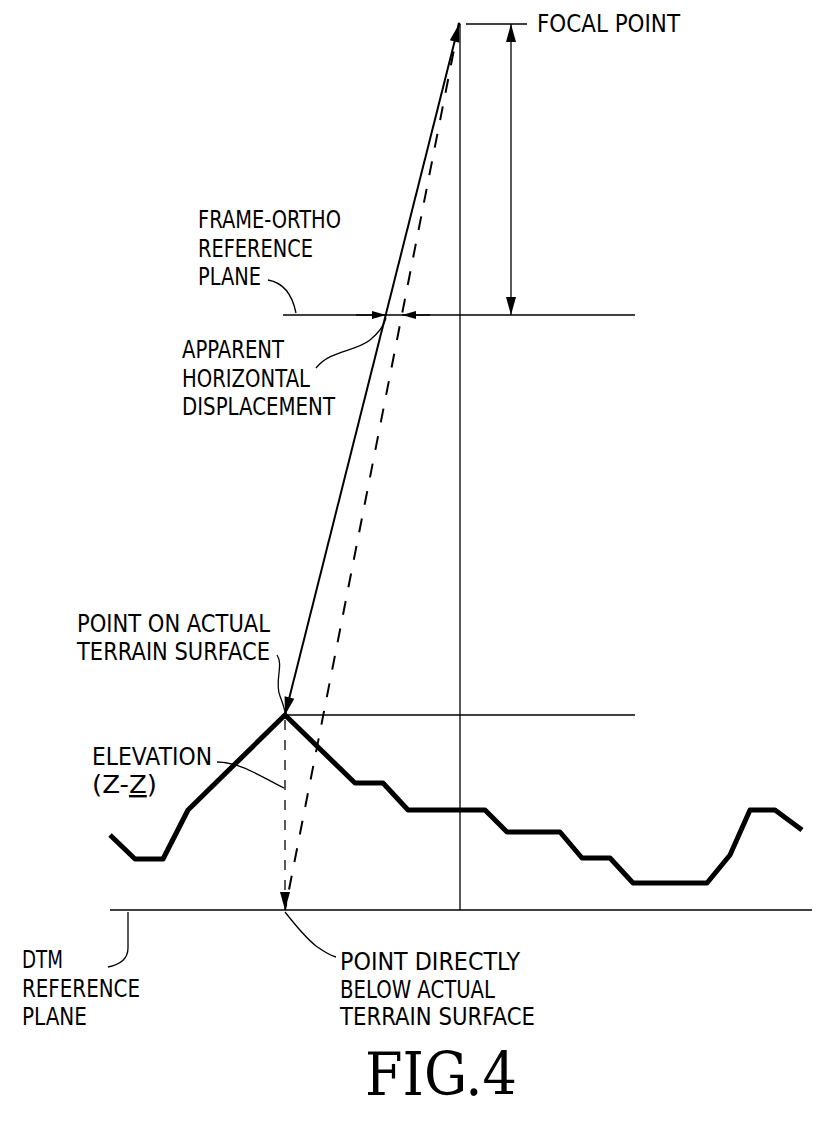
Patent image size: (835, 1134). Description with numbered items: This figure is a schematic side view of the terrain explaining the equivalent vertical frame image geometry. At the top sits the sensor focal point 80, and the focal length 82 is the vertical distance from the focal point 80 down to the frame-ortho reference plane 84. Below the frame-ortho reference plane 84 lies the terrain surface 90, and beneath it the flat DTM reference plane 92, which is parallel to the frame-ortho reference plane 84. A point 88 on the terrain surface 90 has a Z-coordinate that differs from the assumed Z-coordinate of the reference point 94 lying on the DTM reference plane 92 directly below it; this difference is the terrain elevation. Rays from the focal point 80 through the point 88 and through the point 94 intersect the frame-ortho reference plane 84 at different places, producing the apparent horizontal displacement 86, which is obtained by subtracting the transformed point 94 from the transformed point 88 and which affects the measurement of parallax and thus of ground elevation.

The sensor focal point 80 is at (458, 24).
The focal length 82 is at (513, 160).
The frame-ortho reference plane 84 is at (586, 314).
The apparent horizontal displacement 86 is at (410, 330).
The point on actual terrain surface 88 is at (283, 713).
The terrain surface 90 is at (500, 824).
The DTM reference plane 92 is at (583, 912).
The point directly below actual terrain surface 94 is at (285, 912).